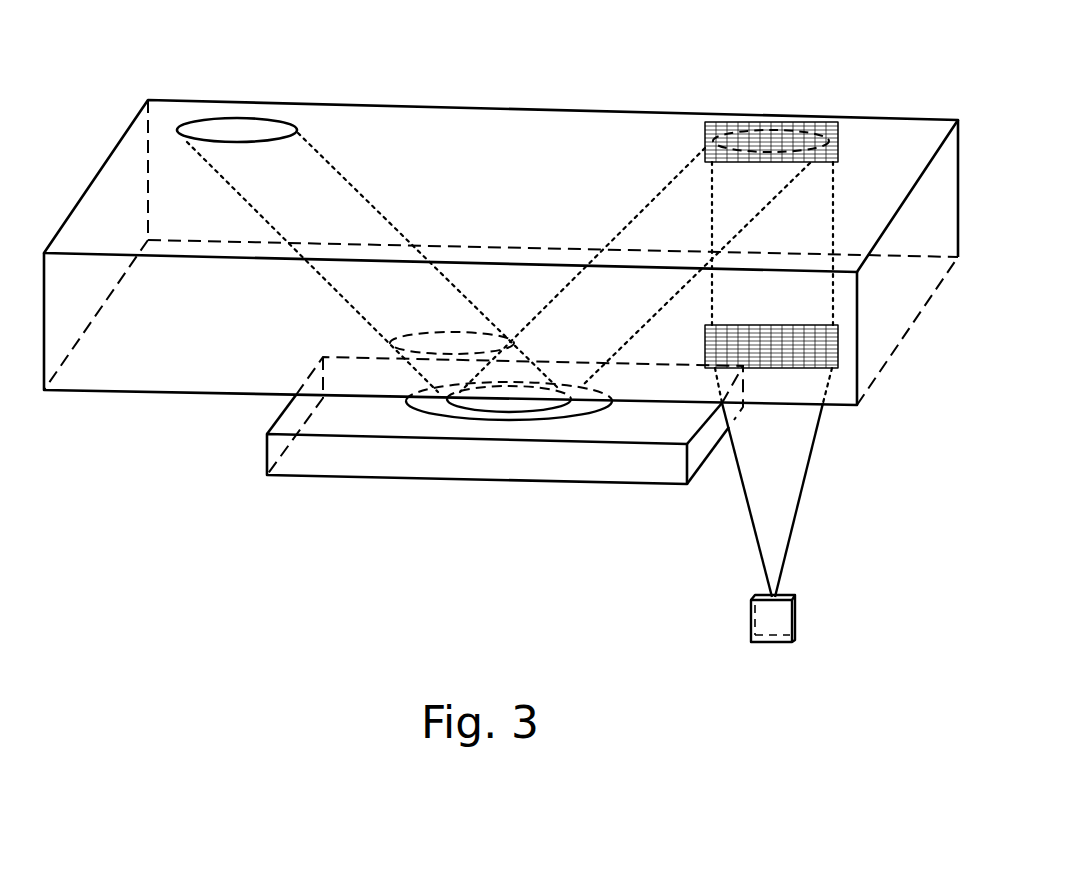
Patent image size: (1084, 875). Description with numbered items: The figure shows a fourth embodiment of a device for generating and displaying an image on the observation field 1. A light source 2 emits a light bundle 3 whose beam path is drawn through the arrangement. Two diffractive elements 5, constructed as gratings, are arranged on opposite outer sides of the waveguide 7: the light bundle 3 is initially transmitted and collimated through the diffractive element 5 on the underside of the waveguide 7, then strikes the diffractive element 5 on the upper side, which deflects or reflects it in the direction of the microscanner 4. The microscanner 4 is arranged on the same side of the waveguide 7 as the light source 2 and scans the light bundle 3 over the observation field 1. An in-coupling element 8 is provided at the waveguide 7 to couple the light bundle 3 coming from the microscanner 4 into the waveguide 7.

The observation field 1 is at (245, 118).
The light source 2 is at (775, 645).
The light bundle 3 is at (803, 482).
The microscanner 4 is at (508, 482).
The diffractive element 5 is at (767, 120).
The waveguide 7 is at (548, 105).
The in-coupling element 8 is at (417, 353).